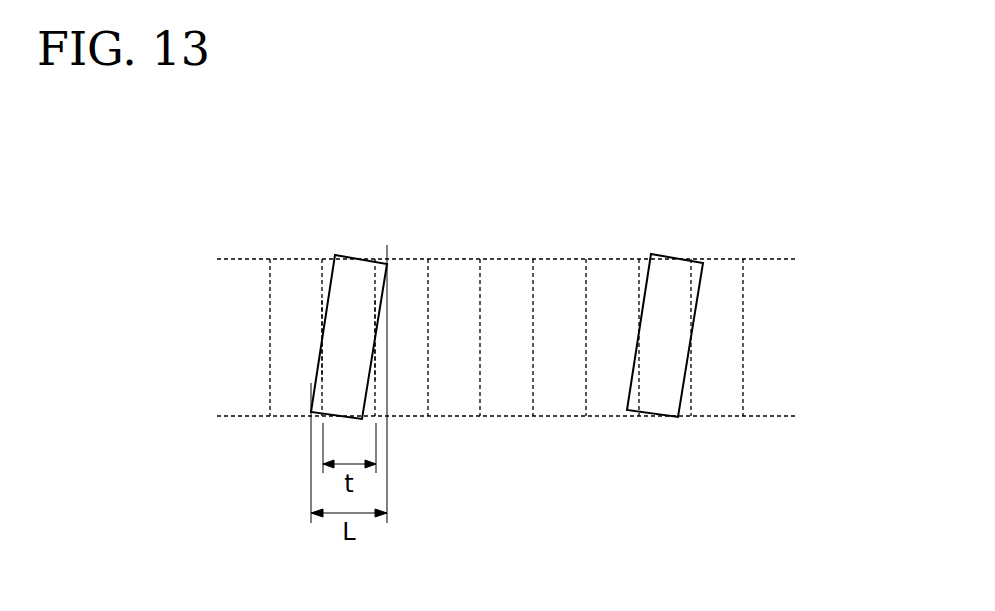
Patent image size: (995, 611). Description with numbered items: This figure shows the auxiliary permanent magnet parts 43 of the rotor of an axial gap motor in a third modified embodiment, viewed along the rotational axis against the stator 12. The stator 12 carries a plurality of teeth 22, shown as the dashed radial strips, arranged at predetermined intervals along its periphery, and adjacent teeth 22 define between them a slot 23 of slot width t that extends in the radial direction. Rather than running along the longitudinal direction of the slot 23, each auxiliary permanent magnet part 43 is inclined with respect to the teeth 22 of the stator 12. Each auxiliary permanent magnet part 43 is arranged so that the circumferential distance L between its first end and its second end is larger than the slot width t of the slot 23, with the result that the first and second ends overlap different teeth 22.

The stator 12 is at (779, 254).
The teeth 22 is at (298, 275).
The slot 23 is at (354, 275).
The auxiliary permanent magnet part 43 is at (317, 368).